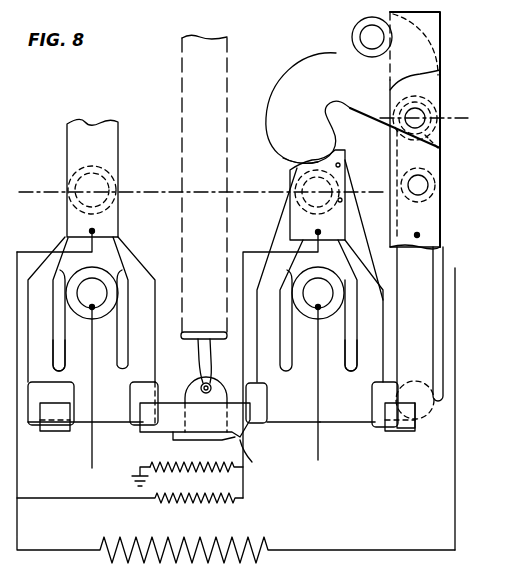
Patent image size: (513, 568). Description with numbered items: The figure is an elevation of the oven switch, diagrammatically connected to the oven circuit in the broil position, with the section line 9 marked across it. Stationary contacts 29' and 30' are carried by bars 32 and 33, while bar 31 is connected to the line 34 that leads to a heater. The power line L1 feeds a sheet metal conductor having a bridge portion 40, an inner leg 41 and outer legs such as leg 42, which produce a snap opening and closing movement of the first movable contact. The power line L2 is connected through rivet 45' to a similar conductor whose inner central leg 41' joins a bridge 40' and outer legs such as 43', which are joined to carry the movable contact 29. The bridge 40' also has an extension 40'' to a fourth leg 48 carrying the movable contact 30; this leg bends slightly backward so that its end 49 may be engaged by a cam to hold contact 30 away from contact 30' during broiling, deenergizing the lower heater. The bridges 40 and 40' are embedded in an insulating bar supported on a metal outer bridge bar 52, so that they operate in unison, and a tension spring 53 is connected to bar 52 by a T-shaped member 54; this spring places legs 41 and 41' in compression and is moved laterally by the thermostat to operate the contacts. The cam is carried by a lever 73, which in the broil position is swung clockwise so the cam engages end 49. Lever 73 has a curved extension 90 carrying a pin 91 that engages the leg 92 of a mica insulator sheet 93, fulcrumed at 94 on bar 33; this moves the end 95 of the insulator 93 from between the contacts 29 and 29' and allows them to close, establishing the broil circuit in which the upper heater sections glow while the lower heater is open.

The section line 9- 9 is at (19, 209).
The movable switch contact 29 is at (351, 172).
The stationary switch contact 29' is at (358, 205).
The movable switch contact 30 is at (444, 184).
The stationary switch contact 30' is at (443, 192).
The bar 31 is at (82, 137).
The bar 32 is at (296, 168).
The bar 33 is at (417, 235).
The line 34 is at (17, 492).
The bridge portion 40 is at (85, 427).
The bridge 40' is at (293, 434).
The extension 40'' is at (367, 431).
The inner leg portion 41 is at (86, 370).
The inner central leg 41' is at (342, 370).
The outer leg portion 42 is at (367, 268).
The outer leg portion 43' is at (319, 333).
The rivet 45' is at (318, 287).
The fourth leg 48 is at (395, 270).
The end of fourth leg 49 is at (440, 150).
The metal outer bridge bar 52 is at (160, 436).
The tension spring 53 is at (182, 78).
The T-shaped member 54 is at (258, 462).
The lever 73 is at (476, 560).
The curved extension 90 is at (354, 26).
The pin 91 is at (361, 37).
The leg of insulator sheet 92 is at (440, 30).
The mica insulator sheet 93 is at (289, 87).
The fulcrum 94 is at (405, 115).
The end of insulator sheet 95 is at (283, 140).
The power line L1 is at (86, 401).
The power line L2 is at (319, 401).